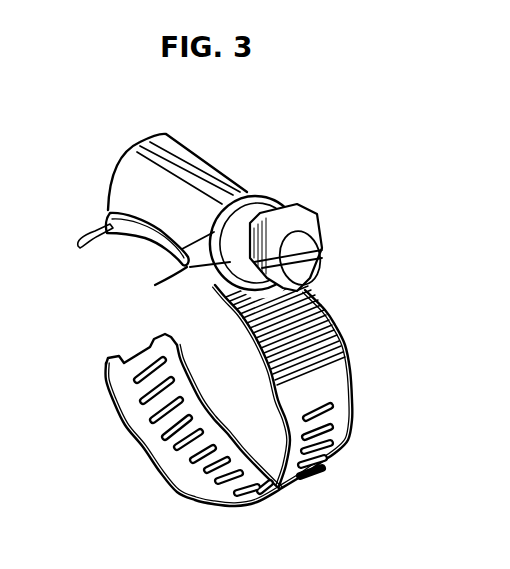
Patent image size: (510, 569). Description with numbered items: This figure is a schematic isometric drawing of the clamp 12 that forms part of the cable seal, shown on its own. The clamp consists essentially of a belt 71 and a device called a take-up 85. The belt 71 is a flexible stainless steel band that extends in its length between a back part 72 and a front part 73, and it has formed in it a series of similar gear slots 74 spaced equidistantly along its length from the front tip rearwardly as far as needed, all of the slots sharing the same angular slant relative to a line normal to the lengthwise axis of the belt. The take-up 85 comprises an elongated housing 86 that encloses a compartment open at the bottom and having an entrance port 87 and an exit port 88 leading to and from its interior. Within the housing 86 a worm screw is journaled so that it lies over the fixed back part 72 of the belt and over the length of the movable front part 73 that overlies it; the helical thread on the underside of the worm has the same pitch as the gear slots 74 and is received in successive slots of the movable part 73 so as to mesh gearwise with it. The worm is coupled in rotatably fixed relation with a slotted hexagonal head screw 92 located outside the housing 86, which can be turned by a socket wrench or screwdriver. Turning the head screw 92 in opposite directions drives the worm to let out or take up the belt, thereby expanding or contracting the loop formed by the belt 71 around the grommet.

The clamp 12 is at (386, 329).
The belt 71 is at (332, 377).
The back part 72 is at (86, 246).
The front part 73 is at (200, 268).
The gear slots 74 is at (185, 443).
The take-up 85 is at (231, 170).
The housing 86 is at (152, 149).
The entrance port 87 is at (108, 222).
The exit port 88 is at (188, 271).
The slotted hexagonal head screw 92 is at (280, 228).